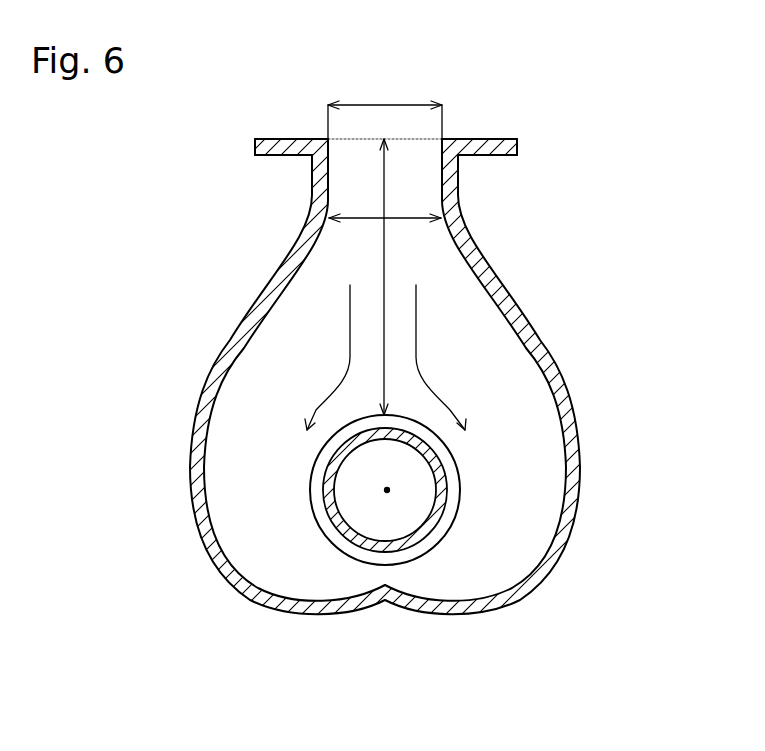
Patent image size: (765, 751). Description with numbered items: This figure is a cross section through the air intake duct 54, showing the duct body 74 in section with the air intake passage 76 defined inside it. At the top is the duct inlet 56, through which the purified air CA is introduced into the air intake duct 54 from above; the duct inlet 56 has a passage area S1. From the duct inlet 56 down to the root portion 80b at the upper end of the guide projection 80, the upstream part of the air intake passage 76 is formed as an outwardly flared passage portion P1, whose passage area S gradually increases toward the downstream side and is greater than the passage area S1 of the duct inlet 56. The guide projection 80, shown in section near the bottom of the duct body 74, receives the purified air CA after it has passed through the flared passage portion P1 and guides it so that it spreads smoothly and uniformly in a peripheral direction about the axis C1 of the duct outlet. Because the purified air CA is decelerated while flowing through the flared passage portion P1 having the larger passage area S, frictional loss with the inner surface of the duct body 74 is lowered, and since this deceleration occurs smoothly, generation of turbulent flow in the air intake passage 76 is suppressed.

The air intake duct 54 is at (382, 375).
The duct inlet 56 is at (440, 142).
The duct body 74 is at (382, 375).
The air intake passage 76 is at (476, 314).
The guide projection 80 is at (430, 468).
The root portion 80b is at (386, 415).
The axis of the duct outlet C1 is at (386, 491).
The passage area of the duct inlet S1 is at (385, 107).
The passage area S is at (406, 216).
The flared passage portion P1 is at (386, 268).
The purified air CA is at (350, 310).